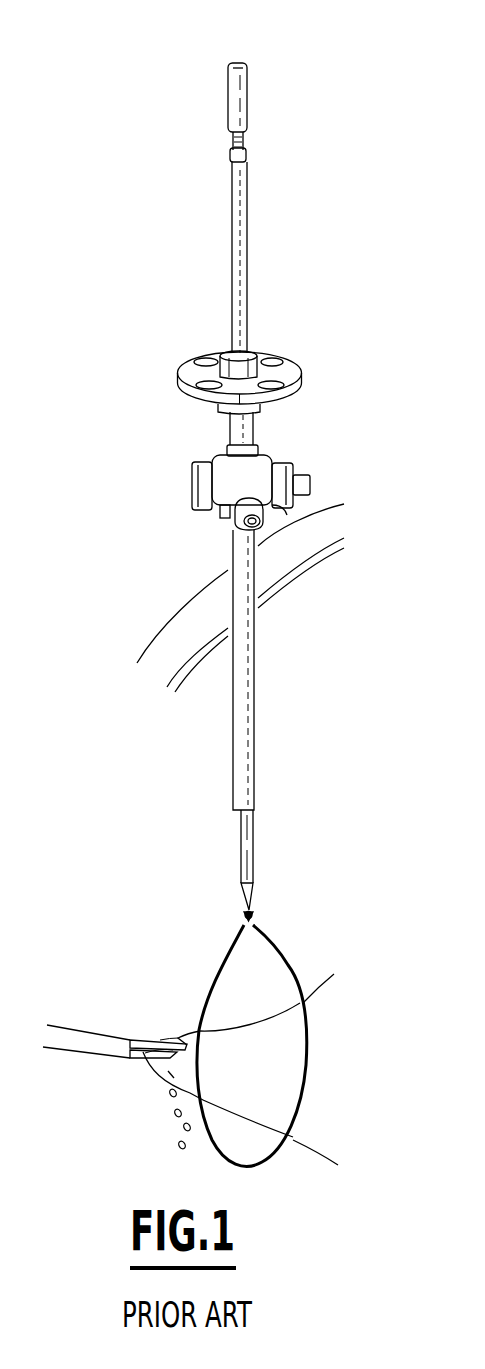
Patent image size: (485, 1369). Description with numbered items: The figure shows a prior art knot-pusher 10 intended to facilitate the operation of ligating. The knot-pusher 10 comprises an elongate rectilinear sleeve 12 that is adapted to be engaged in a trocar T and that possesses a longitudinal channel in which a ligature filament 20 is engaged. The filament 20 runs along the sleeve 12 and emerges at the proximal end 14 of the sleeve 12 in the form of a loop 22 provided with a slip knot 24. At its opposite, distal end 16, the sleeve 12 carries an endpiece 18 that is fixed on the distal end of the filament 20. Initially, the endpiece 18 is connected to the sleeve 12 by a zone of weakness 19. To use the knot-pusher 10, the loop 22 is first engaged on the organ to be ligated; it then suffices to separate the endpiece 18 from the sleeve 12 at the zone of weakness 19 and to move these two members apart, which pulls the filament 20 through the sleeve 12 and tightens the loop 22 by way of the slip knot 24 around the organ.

The knot-pusher 10 is at (224, 719).
The elongate rectilinear sleeve 12 is at (250, 845).
The proximal end 14 is at (240, 895).
The distal end 16 is at (229, 204).
The endpiece 18 is at (240, 103).
The zone of weakness 19 is at (252, 156).
The ligature filament 20 is at (270, 948).
The loop 22 is at (309, 1073).
The slip knot 24 is at (239, 926).
The trocar T is at (255, 730).